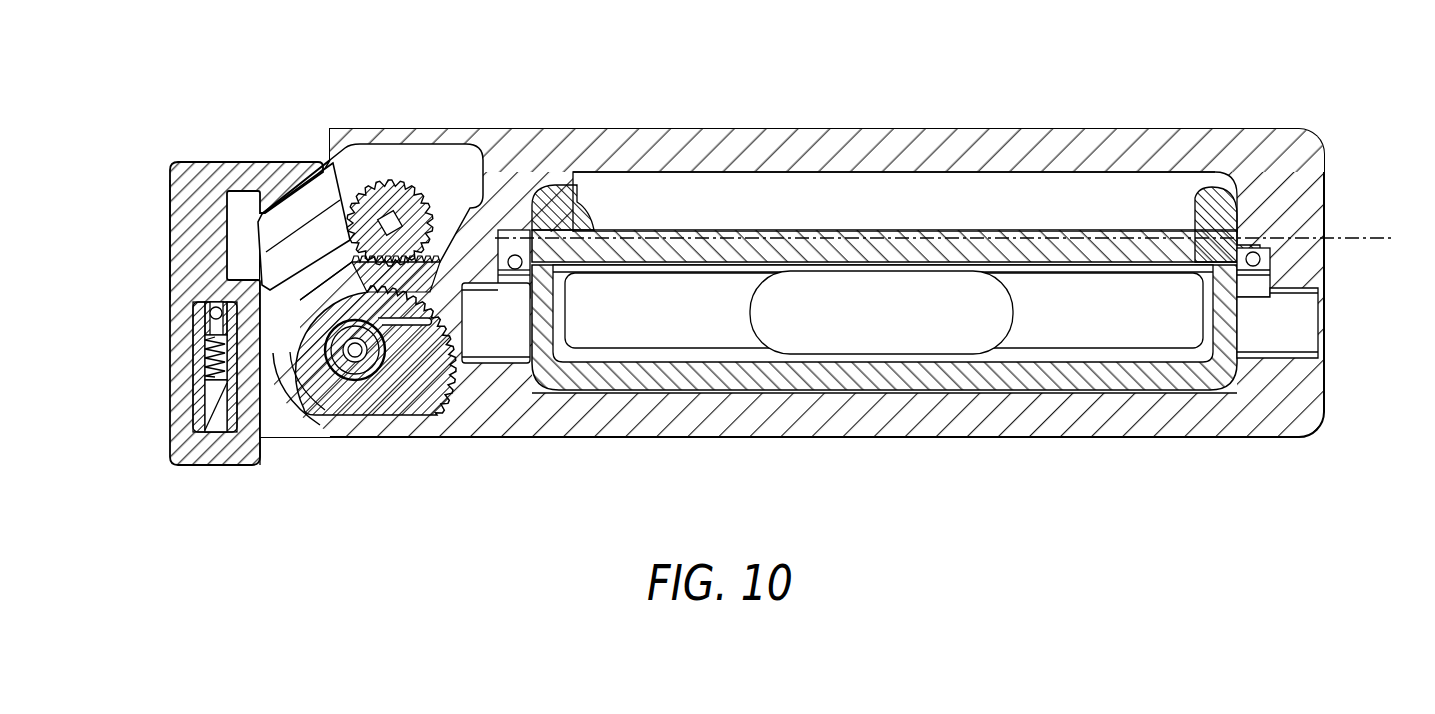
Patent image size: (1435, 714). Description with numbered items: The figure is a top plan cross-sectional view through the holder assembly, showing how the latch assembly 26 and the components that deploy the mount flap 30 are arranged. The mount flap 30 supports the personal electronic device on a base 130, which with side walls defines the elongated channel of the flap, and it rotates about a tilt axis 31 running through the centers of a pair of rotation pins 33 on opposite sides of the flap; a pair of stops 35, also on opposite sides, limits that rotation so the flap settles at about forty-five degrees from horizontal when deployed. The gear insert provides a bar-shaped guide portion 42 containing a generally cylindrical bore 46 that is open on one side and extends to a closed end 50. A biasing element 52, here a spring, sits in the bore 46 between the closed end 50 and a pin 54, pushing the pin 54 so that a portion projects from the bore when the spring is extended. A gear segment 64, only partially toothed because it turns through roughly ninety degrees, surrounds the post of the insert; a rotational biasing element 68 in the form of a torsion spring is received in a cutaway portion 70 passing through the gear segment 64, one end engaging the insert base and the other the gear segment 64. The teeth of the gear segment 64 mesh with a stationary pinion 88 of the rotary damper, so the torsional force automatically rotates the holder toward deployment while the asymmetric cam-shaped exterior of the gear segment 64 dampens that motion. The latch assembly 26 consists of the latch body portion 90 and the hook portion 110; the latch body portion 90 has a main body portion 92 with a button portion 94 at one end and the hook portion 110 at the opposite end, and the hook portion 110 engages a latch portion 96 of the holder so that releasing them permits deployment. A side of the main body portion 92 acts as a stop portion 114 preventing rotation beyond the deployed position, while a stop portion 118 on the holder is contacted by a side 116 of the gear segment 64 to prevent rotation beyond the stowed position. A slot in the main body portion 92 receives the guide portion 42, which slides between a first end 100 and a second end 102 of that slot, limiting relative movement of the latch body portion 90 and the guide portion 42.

The latch assembly 26 is at (302, 130).
The mount flap 30 is at (619, 230).
The tilt axis 31 is at (1360, 237).
The rotation pins 33 is at (1255, 235).
The stops 35 is at (565, 192).
The guide portion 42 is at (197, 343).
The bore 46 is at (203, 372).
The closed end 50 is at (198, 302).
The biasing element 52 is at (203, 375).
The pin 54 is at (203, 423).
The gear segment 64 is at (367, 387).
The rotational biasing element 68 is at (413, 320).
The cutaway portion 70 is at (400, 327).
The pinion 88 is at (413, 197).
The latch body portion 90 is at (170, 203).
The main body portion 92 is at (172, 317).
The button portion 94 is at (185, 467).
The latch portion 96 is at (350, 275).
The first end 100 is at (215, 420).
The second end 102 is at (212, 325).
The hook portion 110 is at (265, 160).
The stop portion 114 is at (255, 457).
The side 116 is at (307, 199).
The stop portion 118 is at (278, 357).
The base 130 is at (1107, 327).